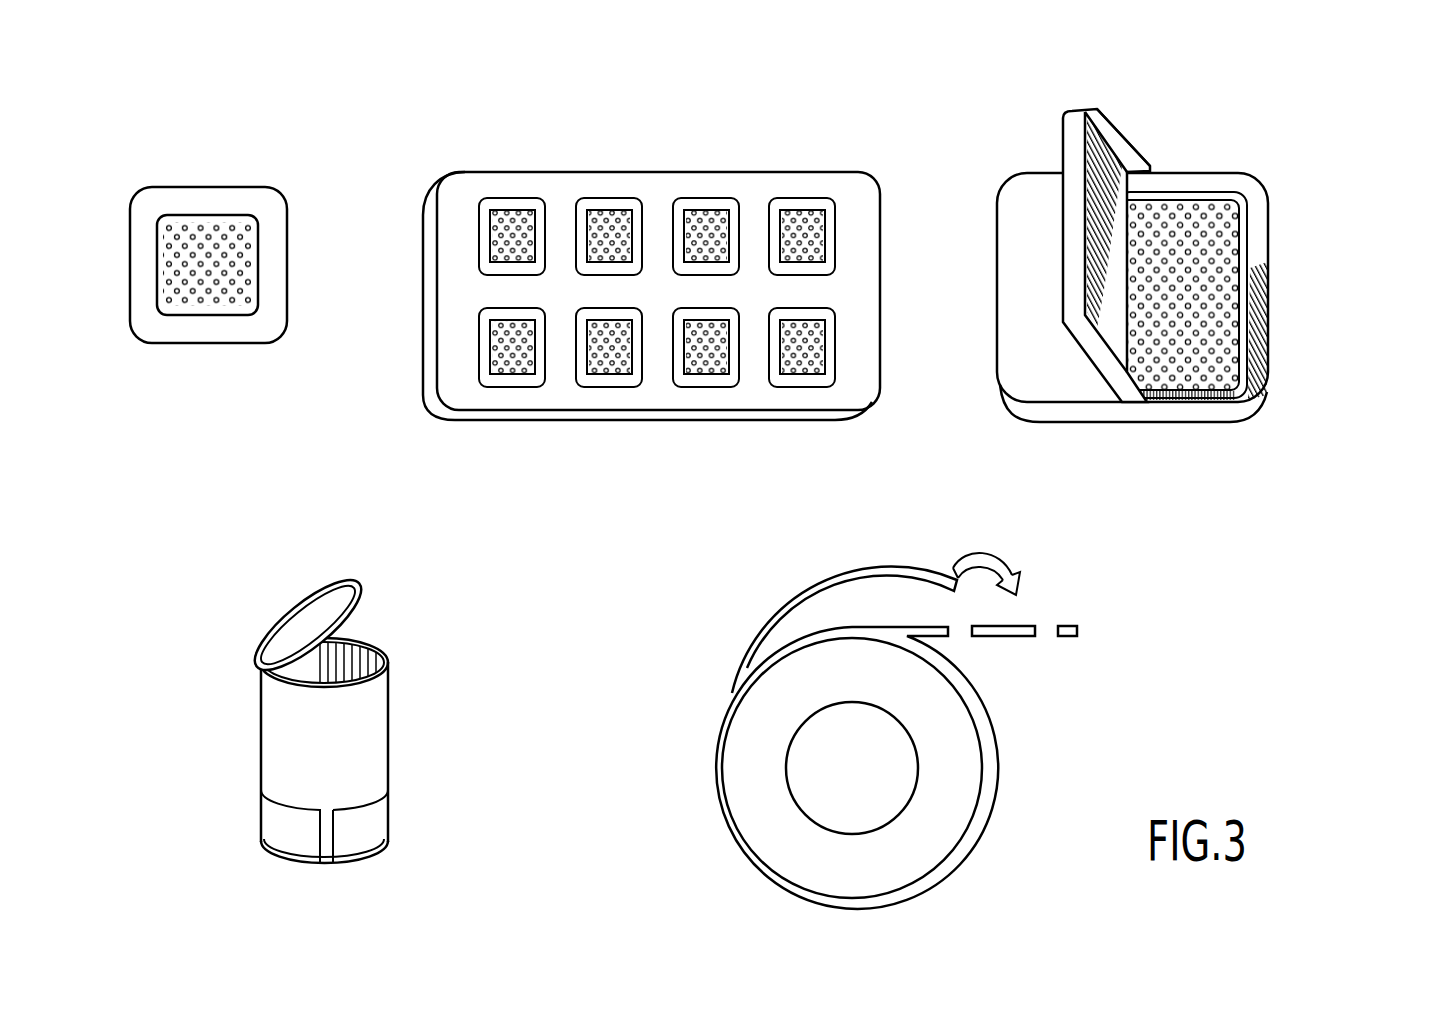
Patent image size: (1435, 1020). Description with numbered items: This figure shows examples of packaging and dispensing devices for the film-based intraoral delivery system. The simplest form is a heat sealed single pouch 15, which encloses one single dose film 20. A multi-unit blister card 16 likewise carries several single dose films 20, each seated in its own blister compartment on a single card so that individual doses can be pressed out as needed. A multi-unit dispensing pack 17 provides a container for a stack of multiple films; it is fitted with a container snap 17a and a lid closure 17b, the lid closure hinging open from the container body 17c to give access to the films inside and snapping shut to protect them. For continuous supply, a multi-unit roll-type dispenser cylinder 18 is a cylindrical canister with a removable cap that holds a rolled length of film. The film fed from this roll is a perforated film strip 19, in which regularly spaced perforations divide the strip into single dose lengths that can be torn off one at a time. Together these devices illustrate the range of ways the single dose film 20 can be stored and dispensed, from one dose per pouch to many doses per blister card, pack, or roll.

The heat sealed single pouch 15 is at (225, 350).
The multi-unit blister card 16 is at (641, 432).
The multi-unit dispensing pack 17 is at (1217, 227).
The container snap 17a is at (1180, 127).
The lid closure 17b is at (1034, 132).
The container body 17c is at (1190, 437).
The multi-unit roll-type dispenser cylinder 18 is at (371, 592).
The perforated film strip 19 is at (1010, 635).
The single dose film 20 is at (207, 203).